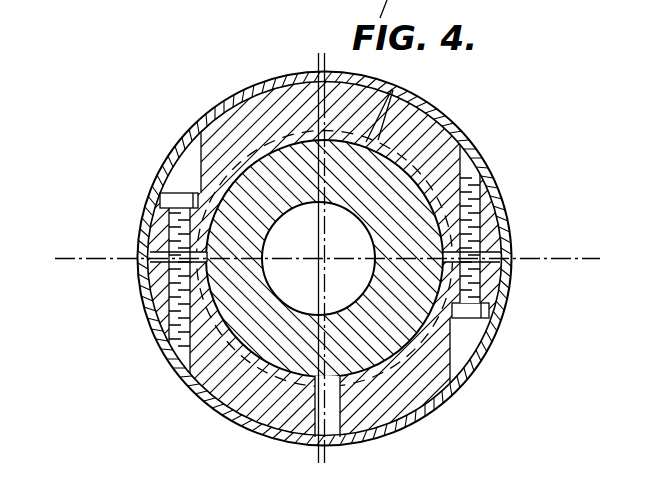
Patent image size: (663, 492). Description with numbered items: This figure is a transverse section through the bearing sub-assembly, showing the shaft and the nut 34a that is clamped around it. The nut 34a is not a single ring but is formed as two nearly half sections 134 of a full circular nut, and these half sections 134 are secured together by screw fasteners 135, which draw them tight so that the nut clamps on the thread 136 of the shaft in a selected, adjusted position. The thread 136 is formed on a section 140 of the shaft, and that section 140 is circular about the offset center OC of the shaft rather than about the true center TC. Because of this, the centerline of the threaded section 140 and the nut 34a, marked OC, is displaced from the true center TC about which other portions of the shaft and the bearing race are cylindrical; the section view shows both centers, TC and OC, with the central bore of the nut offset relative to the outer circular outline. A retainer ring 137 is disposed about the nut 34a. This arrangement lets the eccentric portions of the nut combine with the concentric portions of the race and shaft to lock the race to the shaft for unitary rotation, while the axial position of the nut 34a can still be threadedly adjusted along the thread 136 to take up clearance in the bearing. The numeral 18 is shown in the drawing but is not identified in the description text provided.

The shaft bore 18 is at (390, 348).
The nut 34a is at (452, 123).
The half sections 134 is at (264, 113).
The screw fasteners 135 is at (175, 276).
The thread 136 is at (393, 88).
The retainer ring 137 is at (474, 158).
The section of the shaft 140 is at (263, 330).
The true center TC is at (317, 460).
The offset center OC is at (326, 460).